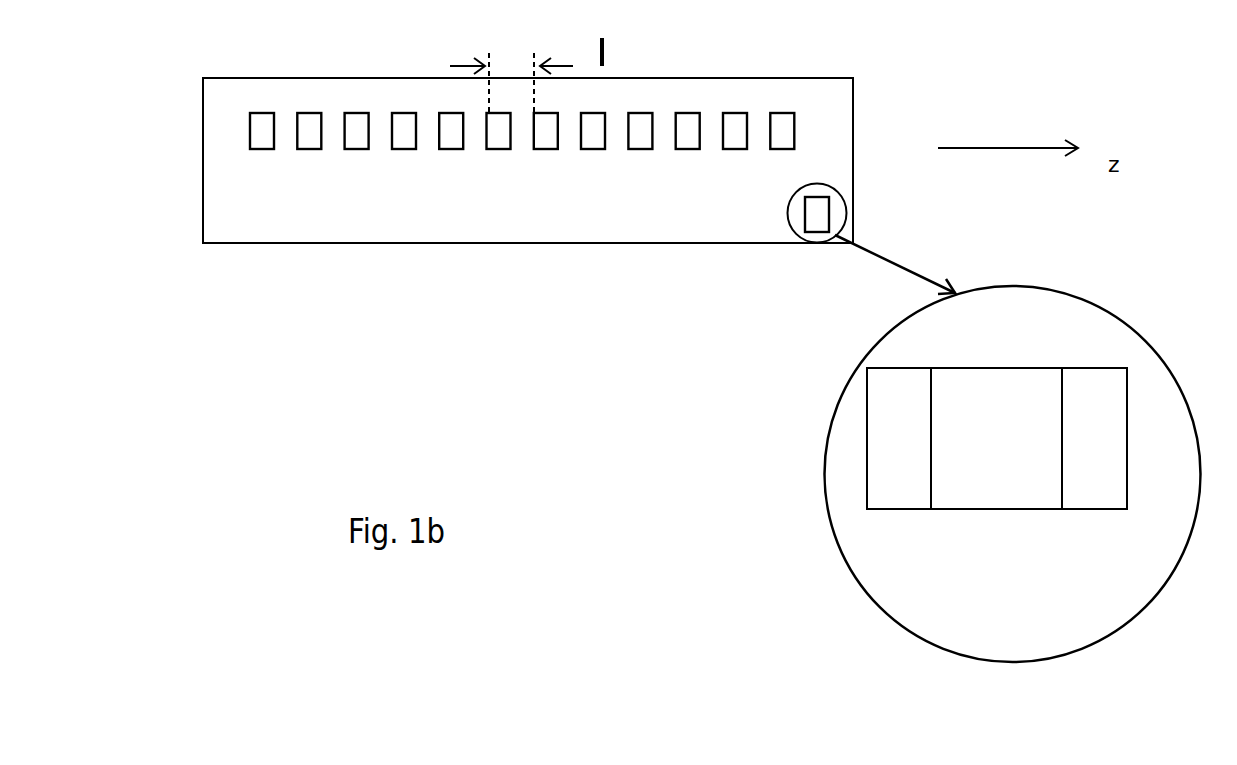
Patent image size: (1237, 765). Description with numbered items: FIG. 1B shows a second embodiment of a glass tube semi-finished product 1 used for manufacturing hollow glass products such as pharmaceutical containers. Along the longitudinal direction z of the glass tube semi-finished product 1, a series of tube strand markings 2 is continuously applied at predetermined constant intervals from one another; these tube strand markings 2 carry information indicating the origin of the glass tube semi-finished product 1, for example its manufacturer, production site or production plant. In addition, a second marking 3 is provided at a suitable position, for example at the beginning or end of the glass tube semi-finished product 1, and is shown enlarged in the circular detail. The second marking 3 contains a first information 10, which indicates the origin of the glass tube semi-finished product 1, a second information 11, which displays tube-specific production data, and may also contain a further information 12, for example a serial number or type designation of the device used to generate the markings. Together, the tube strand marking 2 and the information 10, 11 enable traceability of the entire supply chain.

The glass tube semi-finished product 1 is at (853, 100).
The tube strand marking 2 is at (312, 132).
The second marking 3 is at (812, 219).
The first information 10 is at (896, 492).
The second information 11 is at (1002, 492).
The further information 12 is at (1091, 492).